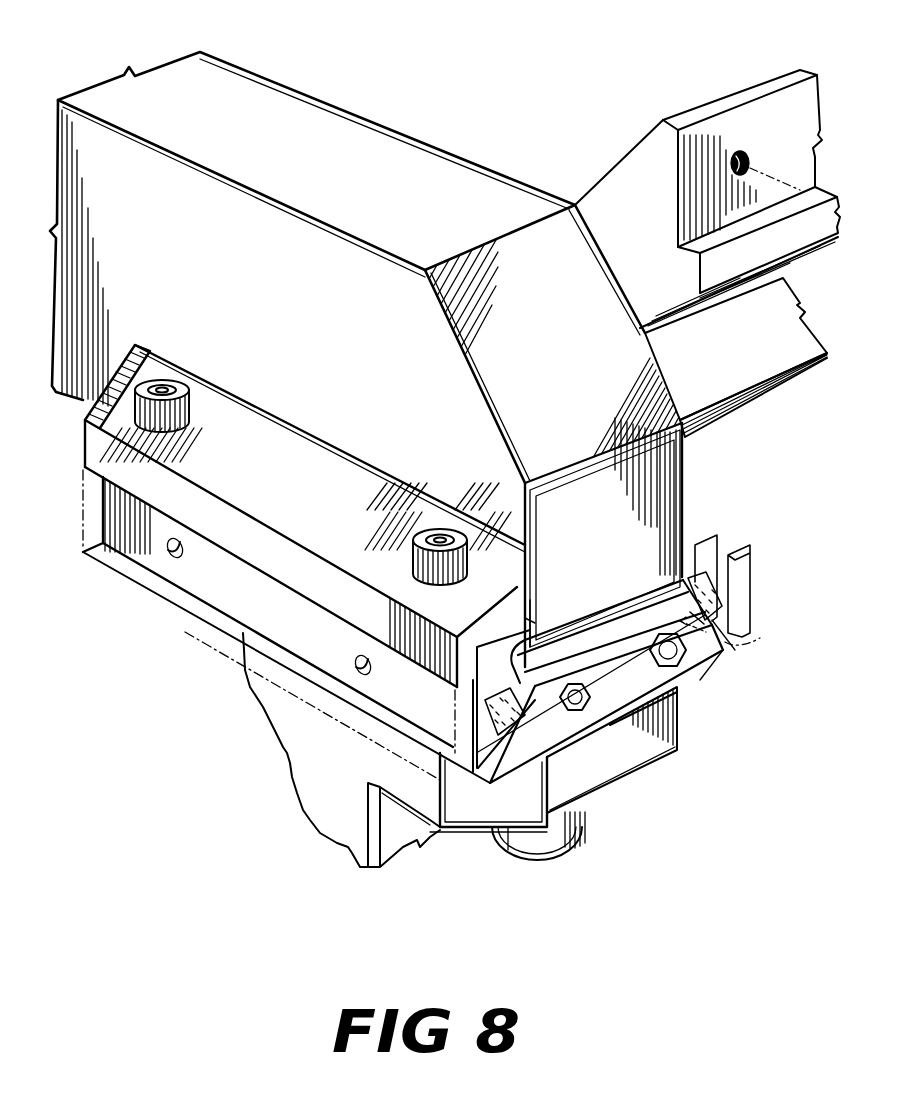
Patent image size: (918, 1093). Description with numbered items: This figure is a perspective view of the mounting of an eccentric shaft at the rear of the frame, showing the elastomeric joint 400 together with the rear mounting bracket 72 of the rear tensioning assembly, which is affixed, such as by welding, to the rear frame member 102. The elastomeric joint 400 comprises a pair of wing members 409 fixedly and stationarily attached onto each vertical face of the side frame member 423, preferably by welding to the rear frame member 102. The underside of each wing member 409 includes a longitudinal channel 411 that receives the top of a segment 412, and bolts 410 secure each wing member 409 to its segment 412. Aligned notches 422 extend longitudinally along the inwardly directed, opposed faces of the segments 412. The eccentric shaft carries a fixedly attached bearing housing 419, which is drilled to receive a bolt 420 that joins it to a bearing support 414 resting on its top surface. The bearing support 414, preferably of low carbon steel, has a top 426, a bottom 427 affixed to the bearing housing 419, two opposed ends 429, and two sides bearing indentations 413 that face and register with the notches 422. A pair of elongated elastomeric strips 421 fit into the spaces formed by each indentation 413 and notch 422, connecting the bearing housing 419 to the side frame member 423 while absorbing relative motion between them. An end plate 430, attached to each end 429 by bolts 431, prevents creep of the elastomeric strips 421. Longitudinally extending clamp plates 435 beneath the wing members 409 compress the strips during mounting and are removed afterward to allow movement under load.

The rear mounting bracket 72 is at (752, 122).
The rear frame member 102 is at (795, 332).
The elastomeric joint 400 is at (612, 585).
The wing member 409 is at (245, 455).
The bolt 410 is at (165, 385).
The longitudinal channel 411 is at (735, 548).
The segment 412 is at (715, 570).
The indentation 413 is at (722, 648).
The bearing support 414 is at (715, 680).
The bearing housing 419 is at (282, 750).
The bolt 420 is at (552, 850).
The elastomeric strip 421 is at (530, 624).
The notch 422 is at (478, 737).
The side frame member 423 is at (355, 132).
The top 426 is at (636, 602).
The bottom 427 is at (662, 758).
The end 429 is at (695, 705).
The end plate 430 is at (594, 687).
The bolt 431 is at (620, 705).
The clamp plate 435 is at (190, 625).